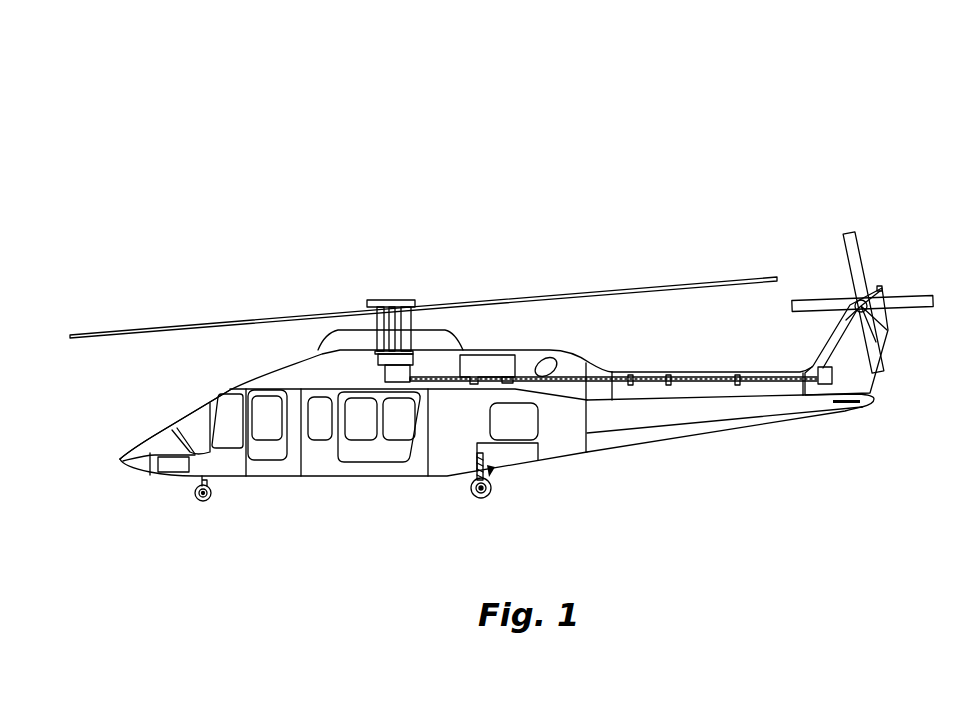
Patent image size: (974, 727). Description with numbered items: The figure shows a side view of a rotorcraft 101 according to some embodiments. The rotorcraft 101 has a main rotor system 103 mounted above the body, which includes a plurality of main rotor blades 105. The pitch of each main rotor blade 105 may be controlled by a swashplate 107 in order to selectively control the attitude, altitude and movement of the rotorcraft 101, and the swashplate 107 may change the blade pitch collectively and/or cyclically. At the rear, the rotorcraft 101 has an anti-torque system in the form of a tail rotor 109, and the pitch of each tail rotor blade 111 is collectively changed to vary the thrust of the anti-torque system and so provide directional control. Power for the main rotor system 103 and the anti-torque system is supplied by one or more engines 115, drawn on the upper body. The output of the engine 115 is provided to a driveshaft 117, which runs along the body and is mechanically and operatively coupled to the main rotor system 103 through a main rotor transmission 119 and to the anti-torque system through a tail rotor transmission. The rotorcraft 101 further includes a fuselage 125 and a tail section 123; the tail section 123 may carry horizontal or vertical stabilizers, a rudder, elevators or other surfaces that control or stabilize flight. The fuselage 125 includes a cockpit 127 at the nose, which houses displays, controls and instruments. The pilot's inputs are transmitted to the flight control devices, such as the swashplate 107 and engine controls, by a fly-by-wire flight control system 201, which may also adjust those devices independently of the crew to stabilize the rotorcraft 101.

The rotorcraft 101 is at (216, 79).
The main rotor system 103 is at (409, 281).
The main rotor blade 105 is at (660, 282).
The swashplate 107 is at (412, 350).
The tail rotor 109 is at (869, 210).
The tail rotor blade 111 is at (922, 297).
The engine 115 is at (500, 355).
The driveshaft 117 is at (437, 381).
The main rotor transmission 119 is at (386, 377).
The tail section 123 is at (708, 435).
The fuselage 125 is at (344, 477).
The cockpit 127 is at (185, 418).
The fly-by-wire flight control system 201 is at (157, 472).